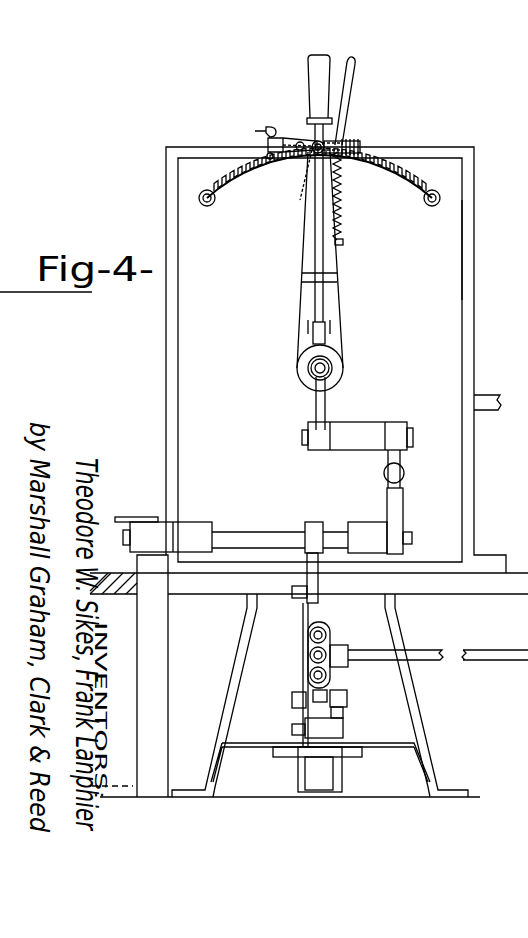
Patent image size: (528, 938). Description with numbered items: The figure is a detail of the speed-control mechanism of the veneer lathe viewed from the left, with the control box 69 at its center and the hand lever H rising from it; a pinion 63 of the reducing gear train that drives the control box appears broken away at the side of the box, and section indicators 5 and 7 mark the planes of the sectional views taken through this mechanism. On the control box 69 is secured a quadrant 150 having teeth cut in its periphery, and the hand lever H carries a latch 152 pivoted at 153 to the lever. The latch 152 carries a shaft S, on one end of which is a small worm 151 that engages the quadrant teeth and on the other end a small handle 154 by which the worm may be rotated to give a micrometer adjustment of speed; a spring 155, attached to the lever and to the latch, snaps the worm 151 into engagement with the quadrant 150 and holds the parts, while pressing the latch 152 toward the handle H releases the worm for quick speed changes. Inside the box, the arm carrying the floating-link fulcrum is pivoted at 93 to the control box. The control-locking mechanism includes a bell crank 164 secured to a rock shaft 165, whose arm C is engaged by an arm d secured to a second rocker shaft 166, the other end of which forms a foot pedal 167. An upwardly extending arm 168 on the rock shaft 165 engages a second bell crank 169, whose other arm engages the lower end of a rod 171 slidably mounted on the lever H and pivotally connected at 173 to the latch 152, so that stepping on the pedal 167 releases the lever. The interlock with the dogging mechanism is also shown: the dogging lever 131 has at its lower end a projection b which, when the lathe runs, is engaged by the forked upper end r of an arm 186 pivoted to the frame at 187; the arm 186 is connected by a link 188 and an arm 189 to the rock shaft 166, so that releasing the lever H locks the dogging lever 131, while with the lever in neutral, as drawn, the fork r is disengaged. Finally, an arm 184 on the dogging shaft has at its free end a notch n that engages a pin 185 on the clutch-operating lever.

The hand lever H is at (312, 75).
The latch 152 is at (353, 84).
The small handle 154 is at (270, 131).
The pivot 153 is at (303, 140).
The small worm 151 is at (352, 145).
The quadrant 150 is at (307, 160).
The shaft S is at (273, 182).
The pivotal connection 173 is at (308, 155).
The spring 155 is at (340, 210).
The rod 171 is at (323, 292).
The second bell crank 169 is at (322, 336).
The pivot 93 is at (312, 372).
The upwardly extending arm 168 is at (317, 404).
The rock shaft 165 is at (303, 437).
The bell crank 164 is at (406, 461).
The arm C is at (384, 476).
The arm d is at (395, 506).
The second rocker shaft 166 is at (262, 530).
The foot pedal 167 is at (118, 517).
The arm 189 is at (310, 580).
The link 188 is at (303, 683).
The dogging lever 131 is at (328, 622).
The pin 185 is at (527, 667).
The notch n is at (527, 696).
The arm 184 is at (527, 728).
The projection b is at (335, 700).
The forked upper end r is at (340, 704).
The arm 186 is at (325, 728).
The pivot 187 is at (320, 777).
The control box 69 is at (466, 252).
The pinion 63 is at (490, 395).
The section line 5 is at (450, 138).
The section line 7 is at (395, 412).